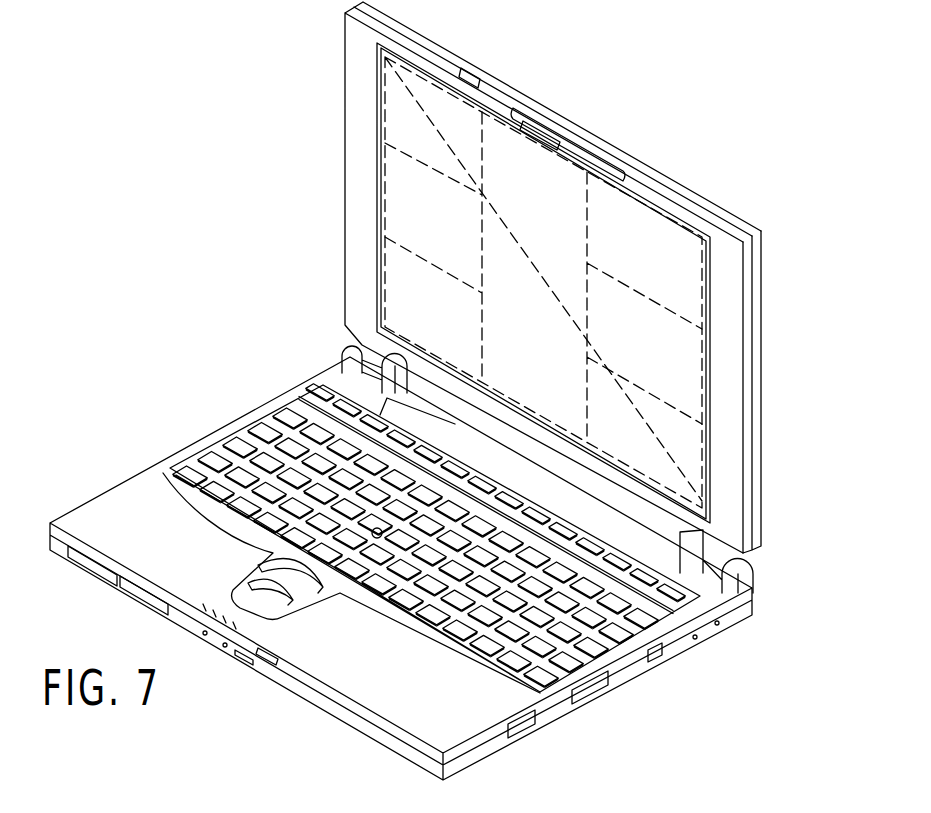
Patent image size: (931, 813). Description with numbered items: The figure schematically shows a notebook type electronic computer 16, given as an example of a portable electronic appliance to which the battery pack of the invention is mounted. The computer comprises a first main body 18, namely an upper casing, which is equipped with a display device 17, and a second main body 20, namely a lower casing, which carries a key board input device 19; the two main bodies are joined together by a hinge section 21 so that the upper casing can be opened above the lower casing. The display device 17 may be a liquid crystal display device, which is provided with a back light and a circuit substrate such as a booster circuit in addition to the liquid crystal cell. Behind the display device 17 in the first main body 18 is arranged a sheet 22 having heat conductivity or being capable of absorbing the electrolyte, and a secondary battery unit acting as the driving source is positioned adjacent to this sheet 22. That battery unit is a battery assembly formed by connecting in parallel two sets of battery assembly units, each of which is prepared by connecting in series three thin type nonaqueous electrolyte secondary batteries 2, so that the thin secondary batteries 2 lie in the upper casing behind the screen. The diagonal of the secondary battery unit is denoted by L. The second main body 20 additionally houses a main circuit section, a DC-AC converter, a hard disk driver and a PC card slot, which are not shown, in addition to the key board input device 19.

The thin type nonaqueous electrolyte secondary battery 2 is at (435, 100).
The notebook type electronic computer 16 is at (532, 276).
The display device 17 is at (710, 392).
The first main body (upper casing) 18 is at (333, 236).
The key board input device 19 is at (245, 440).
The second main body (lower casing) 20 is at (431, 563).
The hinge section 21 is at (735, 572).
The sheet 22 is at (512, 140).
The diagonal of the secondary battery unit L is at (387, 140).